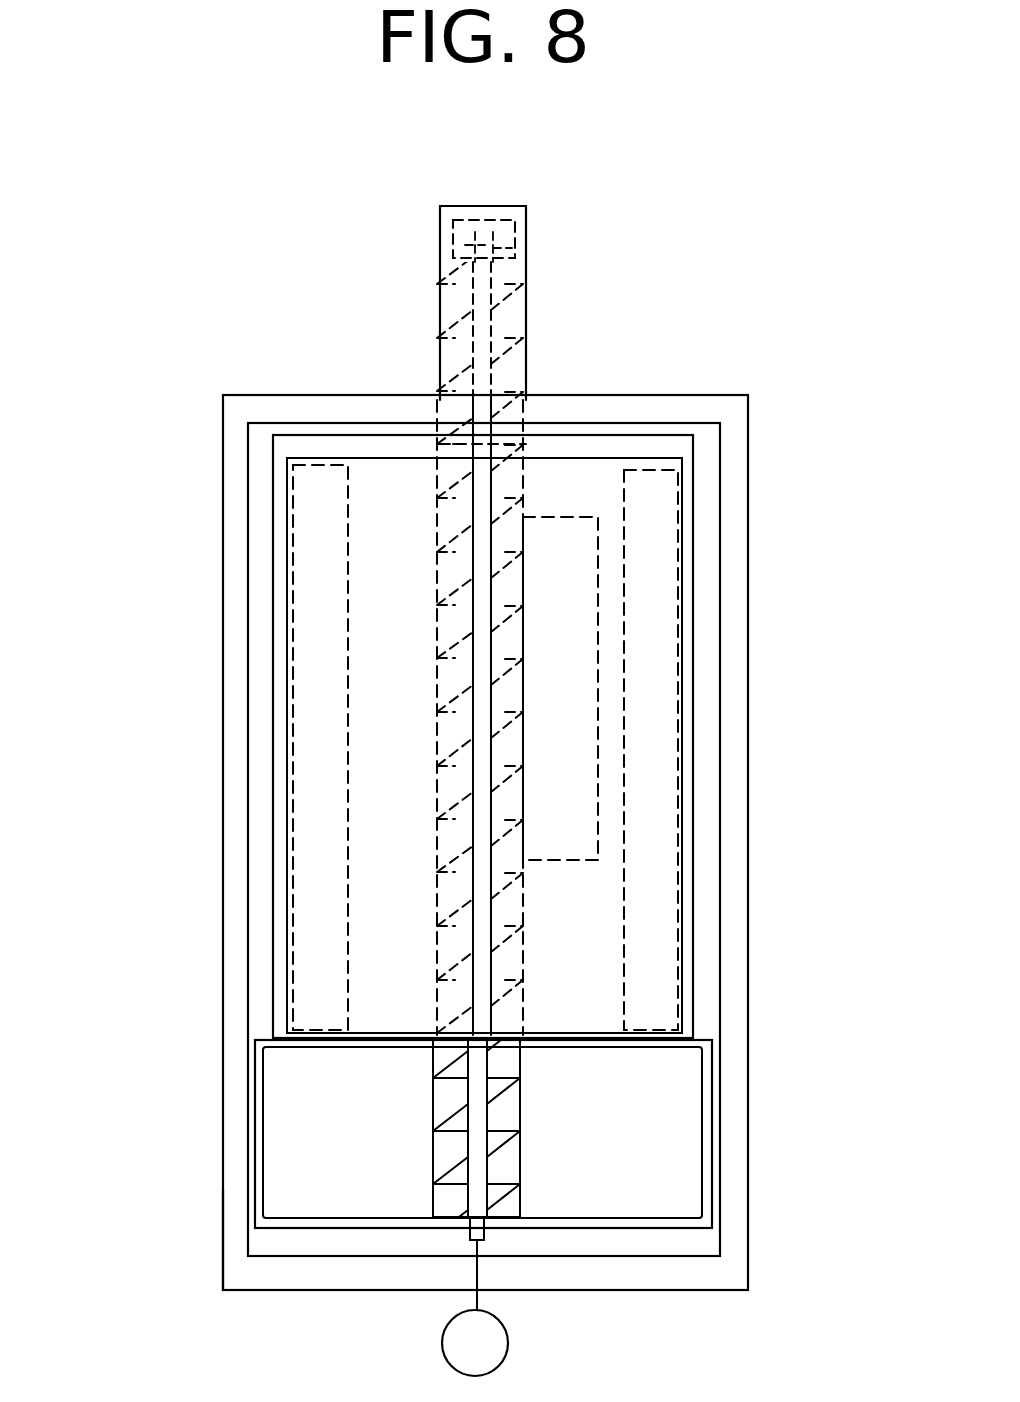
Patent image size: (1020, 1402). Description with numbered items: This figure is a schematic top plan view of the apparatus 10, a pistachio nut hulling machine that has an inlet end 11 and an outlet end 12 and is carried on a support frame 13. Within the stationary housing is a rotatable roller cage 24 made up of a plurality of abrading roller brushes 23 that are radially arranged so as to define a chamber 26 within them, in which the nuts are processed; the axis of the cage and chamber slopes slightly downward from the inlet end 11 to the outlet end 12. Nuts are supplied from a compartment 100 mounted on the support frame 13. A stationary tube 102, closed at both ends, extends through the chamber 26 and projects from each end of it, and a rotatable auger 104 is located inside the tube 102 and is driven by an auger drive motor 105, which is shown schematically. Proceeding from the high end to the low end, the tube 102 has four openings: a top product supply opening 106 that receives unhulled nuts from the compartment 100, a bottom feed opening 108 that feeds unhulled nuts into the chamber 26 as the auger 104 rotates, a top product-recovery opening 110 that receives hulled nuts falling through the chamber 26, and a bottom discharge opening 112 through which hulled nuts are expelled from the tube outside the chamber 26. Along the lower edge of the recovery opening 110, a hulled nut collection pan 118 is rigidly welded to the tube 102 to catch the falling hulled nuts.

The apparatus 10 is at (190, 818).
The inlet end 11 is at (195, 1241).
The outlet end 12 is at (210, 402).
The support frame 13 is at (248, 515).
The roller brushes 23 is at (300, 933).
The roller cage 24 is at (273, 656).
The chamber 26 is at (571, 796).
The compartment 100 is at (305, 1082).
The tube 102 is at (440, 281).
The auger 104 is at (437, 1138).
The auger drive motor 105 is at (443, 1341).
The product supply opening 106 is at (510, 1112).
The feed opening 108 is at (515, 1002).
The product-recovery opening 110 is at (473, 830).
The discharge opening 112 is at (440, 232).
The hulled nut collection pan 118 is at (535, 701).